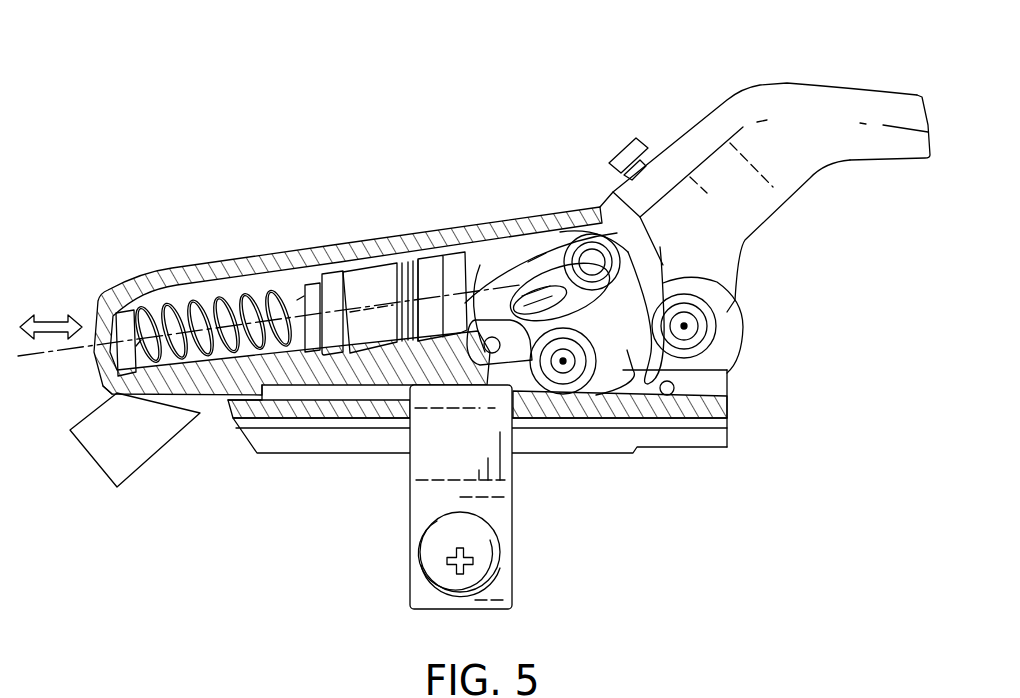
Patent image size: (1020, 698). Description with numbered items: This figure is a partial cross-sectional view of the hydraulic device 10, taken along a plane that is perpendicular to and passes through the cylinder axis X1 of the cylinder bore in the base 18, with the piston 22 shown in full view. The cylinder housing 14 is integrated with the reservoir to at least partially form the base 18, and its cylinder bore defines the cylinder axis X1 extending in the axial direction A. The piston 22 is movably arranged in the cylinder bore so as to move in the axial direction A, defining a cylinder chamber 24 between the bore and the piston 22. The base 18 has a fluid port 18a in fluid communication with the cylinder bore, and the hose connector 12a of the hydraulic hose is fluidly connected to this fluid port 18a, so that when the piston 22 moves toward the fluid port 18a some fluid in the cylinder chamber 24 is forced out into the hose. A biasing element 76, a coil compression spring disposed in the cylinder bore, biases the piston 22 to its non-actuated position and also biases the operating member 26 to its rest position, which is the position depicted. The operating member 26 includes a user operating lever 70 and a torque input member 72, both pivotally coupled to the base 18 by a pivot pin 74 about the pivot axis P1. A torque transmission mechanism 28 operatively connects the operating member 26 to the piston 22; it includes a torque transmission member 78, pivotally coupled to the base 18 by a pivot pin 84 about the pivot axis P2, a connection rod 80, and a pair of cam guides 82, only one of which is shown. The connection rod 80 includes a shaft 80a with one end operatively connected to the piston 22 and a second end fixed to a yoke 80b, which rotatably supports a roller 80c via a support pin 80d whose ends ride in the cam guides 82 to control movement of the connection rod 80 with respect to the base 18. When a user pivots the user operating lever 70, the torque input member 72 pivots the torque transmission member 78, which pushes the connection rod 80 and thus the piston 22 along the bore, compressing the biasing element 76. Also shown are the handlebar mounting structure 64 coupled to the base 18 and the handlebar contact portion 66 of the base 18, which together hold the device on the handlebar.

The hydraulic device 10 is at (170, 178).
The hose connector 12a is at (153, 457).
The cylinder housing 14 is at (302, 246).
The base 18 is at (740, 400).
The fluid port 18a is at (228, 362).
The piston 22 is at (352, 252).
The cylinder chamber 24 is at (253, 295).
The operating member 26 is at (741, 84).
The torque transmission mechanism 28 is at (519, 234).
The handlebar mounting structure 64 is at (530, 547).
The handlebar contact portion 66 is at (355, 440).
The user operating lever 70 is at (838, 140).
The torque input member 72 is at (697, 388).
The pivot pin 74 is at (700, 338).
The biasing element 76 is at (177, 322).
The torque transmission member 78 is at (614, 357).
The connection rod 80 is at (492, 252).
The shaft 80a is at (462, 237).
The yoke 80b is at (520, 292).
The roller 80c is at (532, 262).
The support pin 80d is at (602, 258).
The cam guide 82 is at (527, 285).
The pivot pin 84 is at (581, 372).
The pivot axis P1 is at (690, 326).
The pivot axis P2 is at (563, 365).
The axial direction A is at (48, 318).
The cylinder axis X1 is at (42, 357).